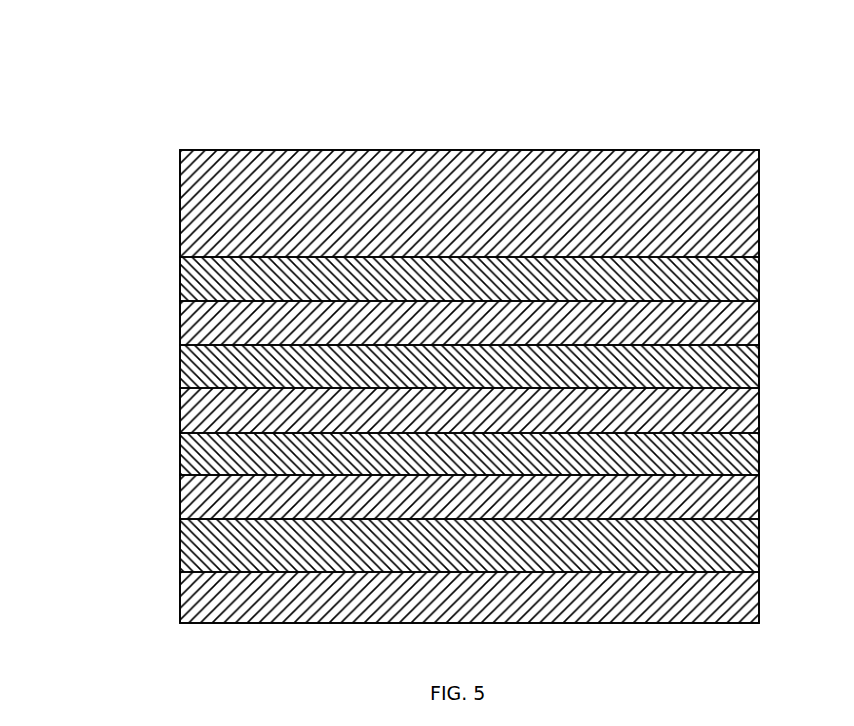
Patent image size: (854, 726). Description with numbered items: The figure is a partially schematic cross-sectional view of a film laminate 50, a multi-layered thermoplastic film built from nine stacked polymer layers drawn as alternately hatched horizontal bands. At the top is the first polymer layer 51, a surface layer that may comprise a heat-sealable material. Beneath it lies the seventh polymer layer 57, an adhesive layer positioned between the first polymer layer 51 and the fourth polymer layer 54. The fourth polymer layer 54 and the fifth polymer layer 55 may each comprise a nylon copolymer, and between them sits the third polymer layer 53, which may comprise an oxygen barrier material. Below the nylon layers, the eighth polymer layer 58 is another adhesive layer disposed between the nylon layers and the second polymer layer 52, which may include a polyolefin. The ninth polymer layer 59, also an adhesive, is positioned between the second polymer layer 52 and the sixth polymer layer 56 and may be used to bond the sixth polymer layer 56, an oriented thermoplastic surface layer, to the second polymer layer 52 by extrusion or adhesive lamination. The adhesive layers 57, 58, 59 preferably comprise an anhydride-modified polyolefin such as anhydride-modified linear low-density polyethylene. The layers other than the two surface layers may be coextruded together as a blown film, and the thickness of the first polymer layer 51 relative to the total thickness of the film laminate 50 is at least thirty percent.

The film laminate 50 is at (503, 107).
The first polymer layer 51 is at (180, 223).
The second polymer layer 52 is at (180, 501).
The third polymer layer 53 is at (180, 371).
The fourth polymer layer 54 is at (180, 323).
The fifth polymer layer 55 is at (180, 417).
The sixth polymer layer 56 is at (180, 604).
The seventh polymer layer 57 is at (759, 275).
The eighth polymer layer 58 is at (759, 450).
The ninth polymer layer 59 is at (759, 545).